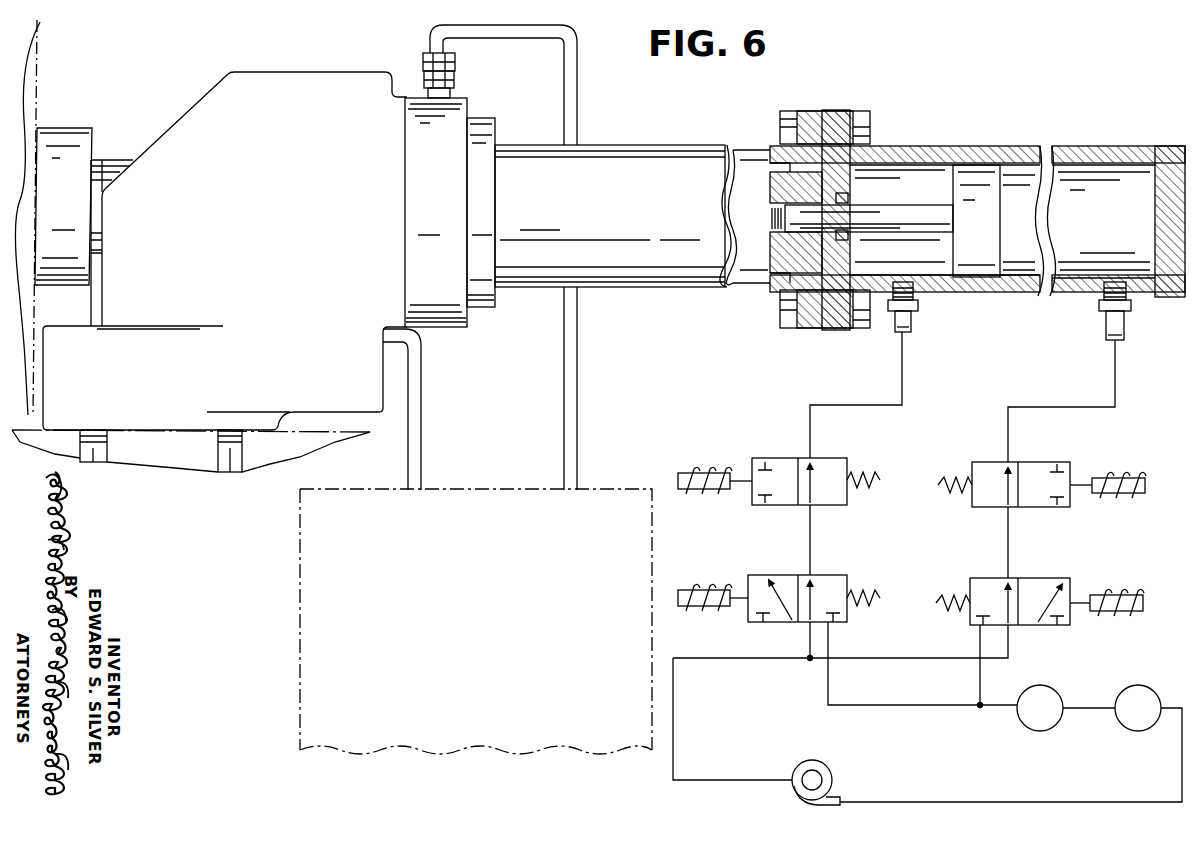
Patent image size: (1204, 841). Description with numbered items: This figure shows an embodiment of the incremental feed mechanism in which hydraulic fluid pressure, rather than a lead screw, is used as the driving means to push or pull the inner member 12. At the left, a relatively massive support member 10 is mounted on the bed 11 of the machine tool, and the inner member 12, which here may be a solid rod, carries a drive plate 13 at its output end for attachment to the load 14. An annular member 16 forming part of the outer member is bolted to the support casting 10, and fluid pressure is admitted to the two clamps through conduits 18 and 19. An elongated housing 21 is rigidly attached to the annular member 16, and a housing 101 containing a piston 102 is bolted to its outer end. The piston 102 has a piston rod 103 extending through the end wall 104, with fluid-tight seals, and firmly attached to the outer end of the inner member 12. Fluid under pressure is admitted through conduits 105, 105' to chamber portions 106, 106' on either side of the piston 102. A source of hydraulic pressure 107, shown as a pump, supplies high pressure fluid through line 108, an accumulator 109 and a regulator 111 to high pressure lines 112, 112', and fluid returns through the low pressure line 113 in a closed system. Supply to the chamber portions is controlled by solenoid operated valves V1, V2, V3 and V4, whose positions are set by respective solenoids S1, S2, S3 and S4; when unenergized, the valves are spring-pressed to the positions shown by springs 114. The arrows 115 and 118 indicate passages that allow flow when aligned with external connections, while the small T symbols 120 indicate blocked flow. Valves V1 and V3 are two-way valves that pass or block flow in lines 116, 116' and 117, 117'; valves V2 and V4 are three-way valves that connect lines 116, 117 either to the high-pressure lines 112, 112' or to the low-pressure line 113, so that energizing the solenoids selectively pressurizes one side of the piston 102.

The support member 10 is at (207, 104).
The bed 11 is at (158, 464).
The inner member 12 is at (110, 168).
The drive plate 13 is at (66, 140).
The load 14 is at (38, 66).
The annular member 16 is at (468, 104).
The conduit 18 is at (578, 350).
The conduit 19 is at (422, 413).
The housing 21 is at (746, 160).
The housing 101 is at (944, 152).
The piston 102 is at (990, 170).
The piston rod 103 is at (861, 215).
The end wall 104 is at (846, 160).
The conduit 105 is at (1134, 311).
The conduit 105' is at (925, 307).
The chamber portion 106 is at (1104, 194).
The chamber portion 106' is at (900, 193).
The source of hydraulic pressure 107 is at (830, 779).
The line 108 is at (1028, 802).
The accumulator 109 is at (1136, 686).
The regulator 111 is at (1039, 686).
The high pressure line 112 is at (998, 666).
The high pressure line 112' is at (922, 663).
The low pressure line 113 is at (736, 662).
The springs 114 is at (940, 482).
The arrows 115 is at (812, 492).
The line 116 is at (862, 582).
The line 116' is at (1086, 401).
The line 117 is at (787, 581).
The line 117' is at (879, 395).
The arrows 118 is at (772, 585).
The T symbols 120 is at (766, 467).
The valve V1 is at (1030, 462).
The valve V2 is at (1034, 578).
The valve V3 is at (820, 461).
The valve V4 is at (816, 576).
The solenoid S1 is at (1128, 467).
The solenoid S2 is at (1112, 595).
The solenoid S3 is at (708, 473).
The solenoid S4 is at (710, 590).